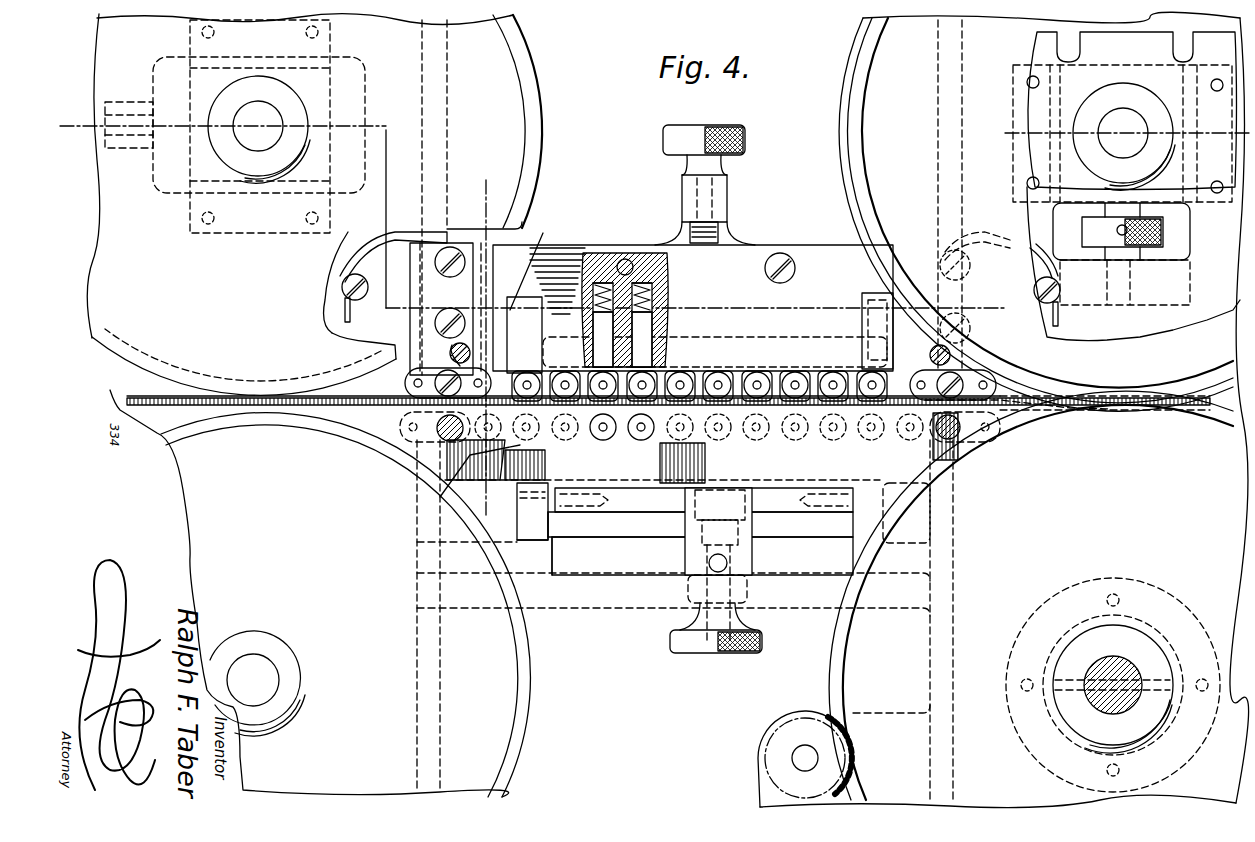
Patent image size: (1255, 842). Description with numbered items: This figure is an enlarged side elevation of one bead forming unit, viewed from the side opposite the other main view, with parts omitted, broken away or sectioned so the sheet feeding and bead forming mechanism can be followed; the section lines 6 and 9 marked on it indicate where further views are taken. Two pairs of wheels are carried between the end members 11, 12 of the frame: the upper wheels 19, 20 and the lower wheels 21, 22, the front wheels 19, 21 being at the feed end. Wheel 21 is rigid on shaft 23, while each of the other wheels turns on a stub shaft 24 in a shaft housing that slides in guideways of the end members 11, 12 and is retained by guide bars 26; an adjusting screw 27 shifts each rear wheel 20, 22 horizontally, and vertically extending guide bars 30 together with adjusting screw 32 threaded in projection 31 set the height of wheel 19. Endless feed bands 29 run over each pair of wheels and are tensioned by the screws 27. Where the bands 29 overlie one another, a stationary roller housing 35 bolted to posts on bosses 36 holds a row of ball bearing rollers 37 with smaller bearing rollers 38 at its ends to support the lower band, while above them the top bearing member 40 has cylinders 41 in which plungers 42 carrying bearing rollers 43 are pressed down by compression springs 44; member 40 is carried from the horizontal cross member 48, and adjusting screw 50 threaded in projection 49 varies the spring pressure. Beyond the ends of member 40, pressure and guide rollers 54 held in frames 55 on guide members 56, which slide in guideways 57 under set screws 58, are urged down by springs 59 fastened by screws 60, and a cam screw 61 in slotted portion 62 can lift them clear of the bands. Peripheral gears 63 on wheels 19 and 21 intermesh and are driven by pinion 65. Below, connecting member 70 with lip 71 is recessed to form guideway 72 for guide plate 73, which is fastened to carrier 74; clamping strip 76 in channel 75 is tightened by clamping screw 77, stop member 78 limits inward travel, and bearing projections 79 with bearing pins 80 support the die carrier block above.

The section line 6- 6 is at (74, 130).
The section line 9- 9 is at (500, 184).
The end member 11 is at (938, 88).
The end member 12 is at (450, 106).
The wheel 19 is at (866, 36).
The wheel 20 is at (500, 72).
The wheel 21 is at (850, 672).
The wheel 22 is at (190, 473).
The shaft 23 is at (1122, 672).
The stub shaft 24 is at (262, 124).
The guide bars 26 is at (190, 195).
The adjusting screw 27 is at (126, 138).
The endless feed bands 29 is at (1025, 398).
The guide bars 30 is at (1060, 70).
The projection 31 is at (1136, 314).
The adjusting screw 32 is at (1150, 248).
The roller housing 35 is at (447, 448).
The bosses 36 is at (430, 452).
The ball bearing rollers 37 is at (640, 445).
The bearing rollers 38 is at (440, 437).
The top bearing member 40 is at (750, 255).
The cylinders 41 is at (655, 315).
The plungers 42 is at (612, 345).
The bearing rollers 43 is at (690, 385).
The compression springs 44 is at (655, 290).
The cross member 48 is at (540, 246).
The projection 49 is at (682, 192).
The adjusting screw 50 is at (712, 130).
The pressure and guide rollers 54 is at (406, 385).
The frames 55 is at (390, 352).
The guide member 56 is at (460, 250).
The guideways 57 is at (480, 280).
The set screws 58 is at (460, 283).
The springs 59 is at (375, 270).
The screws 60 is at (342, 288).
The cam screw 61 is at (880, 348).
The slotted portion 62 is at (450, 348).
The gears 63 is at (862, 66).
The pinion 65 is at (790, 758).
The connecting member 70 is at (560, 608).
The lip 71 is at (612, 560).
The guideway 72 is at (565, 545).
The guide plate 73 is at (800, 542).
The carrier 74 is at (632, 530).
The channel 75 is at (745, 525).
The clamping strip 76 is at (695, 530).
The clamping screw 77 is at (705, 645).
The stop member 78 is at (708, 568).
The bearing projections 79 is at (520, 498).
The bearing pins 80 is at (558, 512).